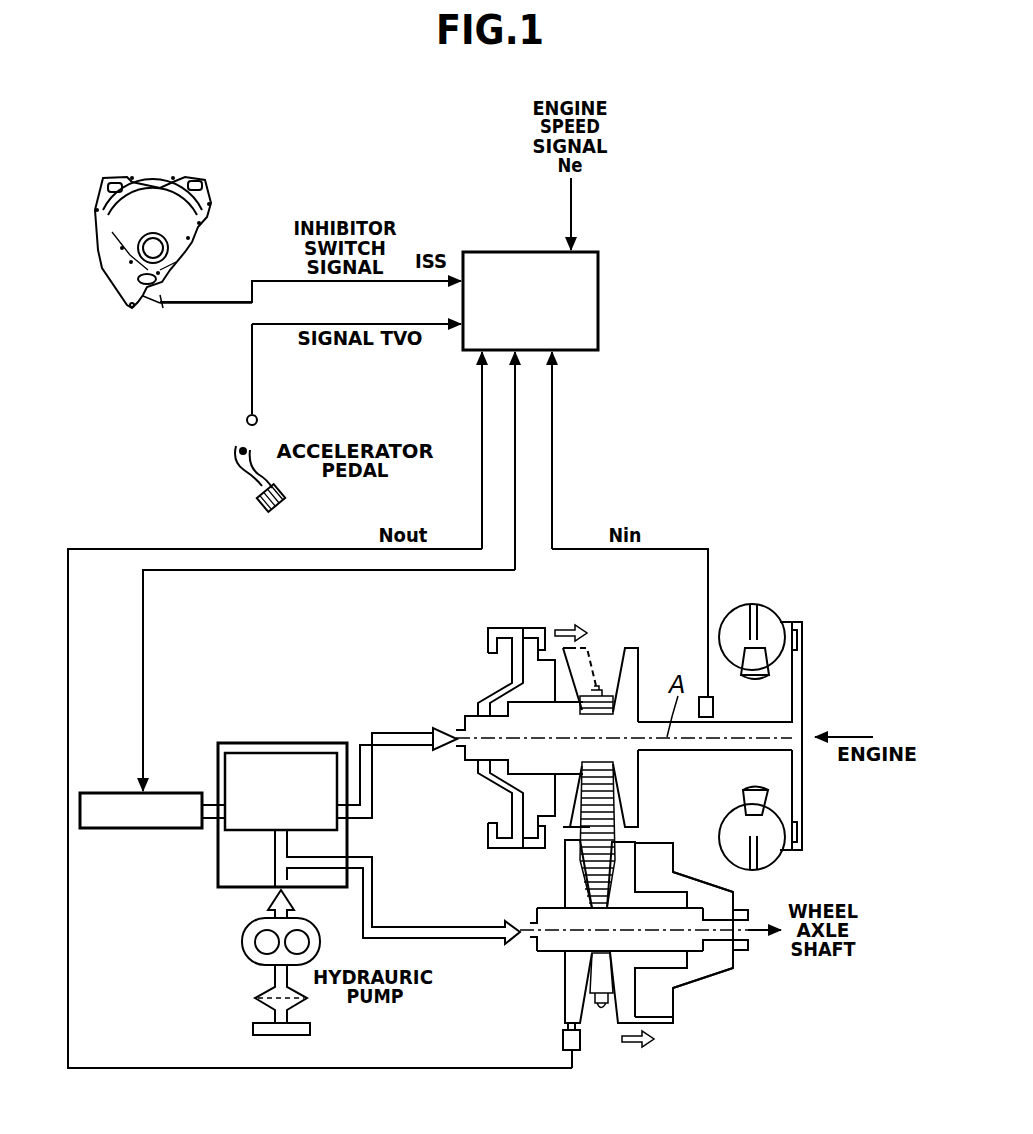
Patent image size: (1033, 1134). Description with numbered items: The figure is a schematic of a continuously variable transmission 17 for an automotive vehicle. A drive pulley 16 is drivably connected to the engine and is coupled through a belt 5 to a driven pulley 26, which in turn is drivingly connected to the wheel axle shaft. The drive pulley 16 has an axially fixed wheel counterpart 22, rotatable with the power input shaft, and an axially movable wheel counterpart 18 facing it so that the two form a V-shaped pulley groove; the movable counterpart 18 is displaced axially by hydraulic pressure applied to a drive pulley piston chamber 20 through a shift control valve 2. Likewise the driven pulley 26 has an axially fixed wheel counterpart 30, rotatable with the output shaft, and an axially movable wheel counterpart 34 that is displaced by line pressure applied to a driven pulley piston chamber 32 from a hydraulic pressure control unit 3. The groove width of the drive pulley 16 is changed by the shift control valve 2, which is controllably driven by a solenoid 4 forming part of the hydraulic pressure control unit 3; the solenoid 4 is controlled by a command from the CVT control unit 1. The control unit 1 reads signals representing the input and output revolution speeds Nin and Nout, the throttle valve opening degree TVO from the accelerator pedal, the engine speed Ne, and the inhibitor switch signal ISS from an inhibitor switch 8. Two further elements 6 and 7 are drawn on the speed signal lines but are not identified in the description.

The CVT control unit 1 is at (483, 252).
The shift control valve 2 is at (281, 753).
The hydraulic pressure control unit 3 is at (218, 860).
The solenoid 4 is at (117, 793).
The belt 5 is at (613, 817).
The input speed sensor 6 is at (713, 707).
The output speed sensor 7 is at (582, 1046).
The inhibitor switch 8 is at (123, 177).
The drive pulley 16 is at (645, 637).
The continuously variable transmission 17 is at (747, 966).
The axially movable wheel counterpart 18 is at (573, 670).
The drive pulley piston chamber 20 is at (533, 678).
The axially fixed wheel counterpart 22 is at (642, 775).
The driven pulley 26 is at (555, 873).
The axially fixed wheel counterpart 30 is at (573, 985).
The driven pulley piston chamber 32 is at (700, 963).
The axially movable wheel counterpart 34 is at (636, 993).